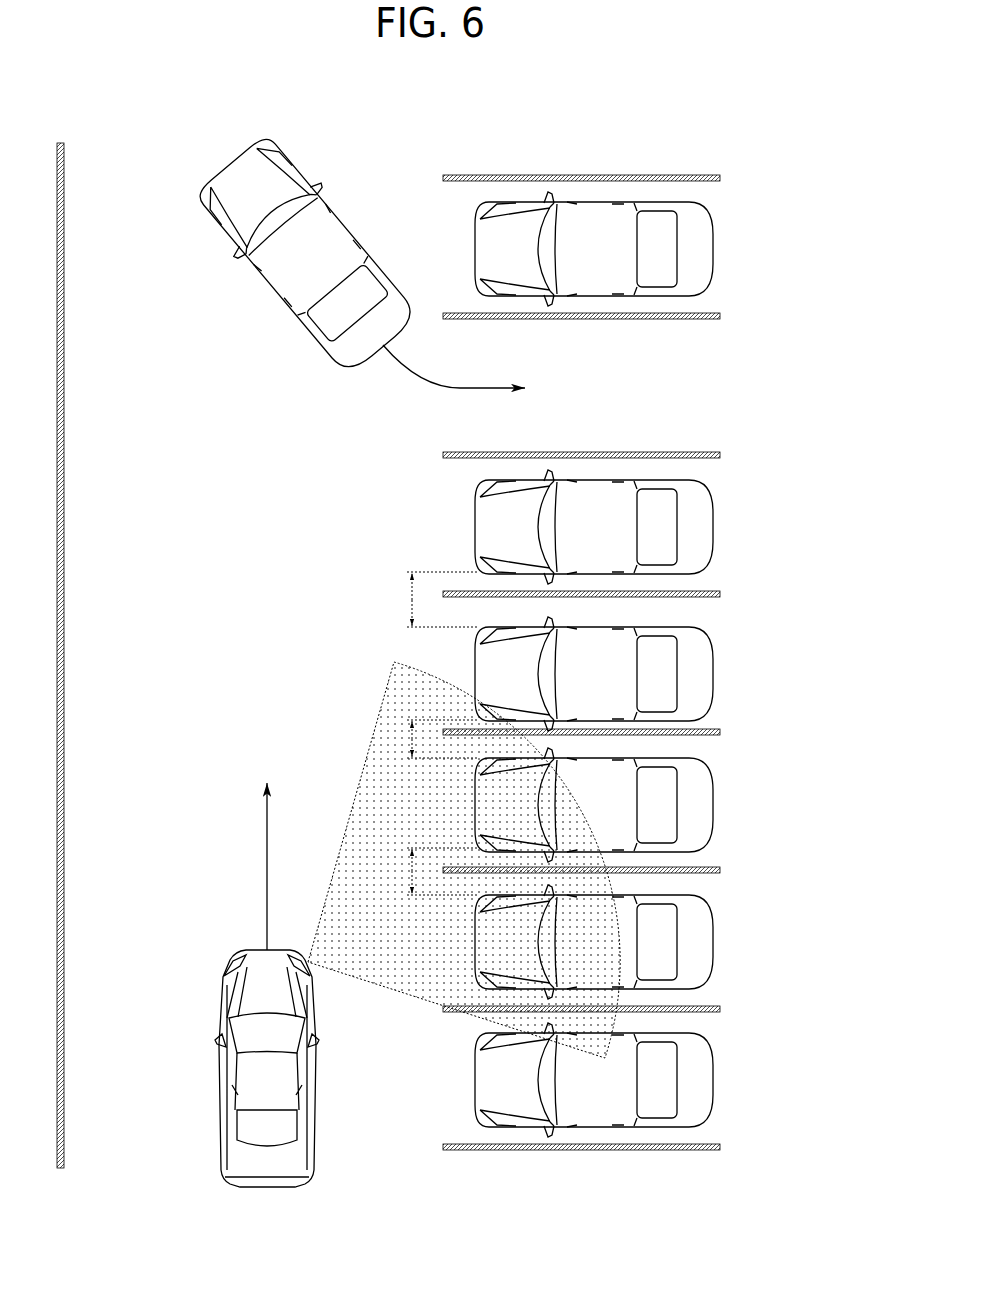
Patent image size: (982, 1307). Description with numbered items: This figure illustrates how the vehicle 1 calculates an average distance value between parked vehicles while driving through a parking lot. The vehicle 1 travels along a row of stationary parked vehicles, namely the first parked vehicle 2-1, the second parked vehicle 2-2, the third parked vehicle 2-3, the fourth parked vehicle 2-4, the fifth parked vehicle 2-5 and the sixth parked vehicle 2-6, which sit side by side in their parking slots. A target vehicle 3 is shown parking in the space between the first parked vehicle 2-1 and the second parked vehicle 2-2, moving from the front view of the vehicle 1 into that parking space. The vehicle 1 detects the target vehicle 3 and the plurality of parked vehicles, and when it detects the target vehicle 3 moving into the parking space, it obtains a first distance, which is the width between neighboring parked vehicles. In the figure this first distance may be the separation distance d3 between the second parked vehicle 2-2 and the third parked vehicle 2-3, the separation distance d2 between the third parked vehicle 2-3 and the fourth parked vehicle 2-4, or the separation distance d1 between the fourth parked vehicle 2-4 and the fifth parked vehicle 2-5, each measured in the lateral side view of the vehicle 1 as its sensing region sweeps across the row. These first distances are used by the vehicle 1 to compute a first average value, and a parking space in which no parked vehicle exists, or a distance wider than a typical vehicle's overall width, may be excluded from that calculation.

The vehicle 1 is at (213, 1161).
The target vehicle 3 is at (306, 157).
The first parked vehicle 2-1 is at (718, 201).
The second parked vehicle 2-2 is at (718, 479).
The third parked vehicle 2-3 is at (718, 628).
The fourth parked vehicle 2-4 is at (718, 758).
The fifth parked vehicle 2-5 is at (718, 896).
The sixth parked vehicle 2-6 is at (718, 1033).
The separation distance d1 is at (402, 870).
The separation distance d2 is at (403, 737).
The separation distance d3 is at (408, 599).